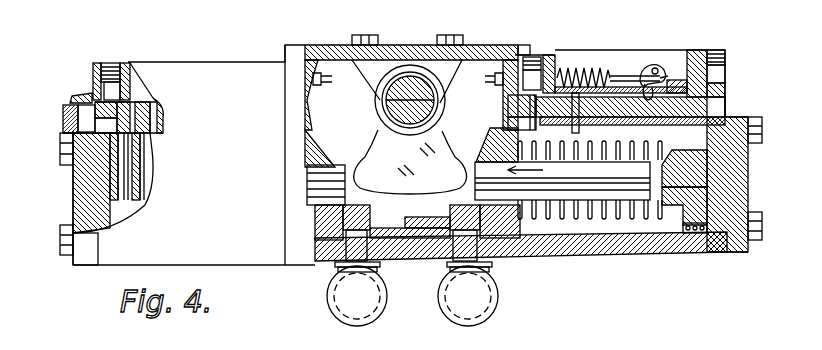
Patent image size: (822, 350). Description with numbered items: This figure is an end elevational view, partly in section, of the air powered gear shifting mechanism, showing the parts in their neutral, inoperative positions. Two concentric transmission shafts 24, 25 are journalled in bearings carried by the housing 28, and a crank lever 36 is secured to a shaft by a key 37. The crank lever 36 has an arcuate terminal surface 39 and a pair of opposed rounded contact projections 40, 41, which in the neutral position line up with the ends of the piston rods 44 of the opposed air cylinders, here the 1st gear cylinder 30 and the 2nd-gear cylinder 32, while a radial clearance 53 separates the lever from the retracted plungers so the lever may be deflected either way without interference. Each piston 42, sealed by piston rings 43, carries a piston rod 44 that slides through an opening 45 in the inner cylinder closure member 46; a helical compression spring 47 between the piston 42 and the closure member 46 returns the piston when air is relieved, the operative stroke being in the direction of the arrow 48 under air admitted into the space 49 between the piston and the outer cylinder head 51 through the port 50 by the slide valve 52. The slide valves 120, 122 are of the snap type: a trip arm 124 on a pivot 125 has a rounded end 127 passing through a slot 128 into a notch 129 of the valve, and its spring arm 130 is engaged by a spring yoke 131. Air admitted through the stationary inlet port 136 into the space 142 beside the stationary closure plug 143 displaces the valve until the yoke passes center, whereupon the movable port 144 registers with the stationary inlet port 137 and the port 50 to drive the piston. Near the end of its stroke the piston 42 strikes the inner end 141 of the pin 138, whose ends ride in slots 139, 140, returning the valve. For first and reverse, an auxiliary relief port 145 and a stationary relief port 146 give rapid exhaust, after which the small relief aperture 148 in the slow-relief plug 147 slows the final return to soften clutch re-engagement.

The inner transmission shaft 24 is at (387, 117).
The outer tubular transmission shaft 25 is at (382, 96).
The housing 28 is at (293, 44).
The 1st gear cylinder 30 is at (148, 157).
The 2nd-gear cylinder 32 is at (730, 254).
The crank lever 36 is at (446, 134).
The key 37 is at (416, 218).
The arcuate terminal surface 39 is at (413, 185).
The contact projection 40 is at (353, 170).
The contact projection 41 is at (458, 160).
The piston 42 is at (131, 208).
The piston rings 43 is at (698, 233).
The piston rod 44 is at (340, 195).
The opening 45 is at (543, 244).
The inner cylinder closure member 46 is at (505, 232).
The helical compression spring 47 is at (623, 228).
The arrow 48 is at (568, 180).
The space 49 is at (709, 156).
The port 50 is at (73, 174).
The outer cylinder head 51 is at (737, 179).
The slide valve 52 is at (513, 108).
The radial clearance 53 is at (352, 150).
The slide valve 120 is at (160, 103).
The slide valve 122 is at (724, 98).
The trip arm 124 is at (648, 72).
The pivot 125 is at (658, 70).
The rounded end 127 is at (641, 80).
The slot 128 is at (148, 100).
The notch 129 is at (642, 124).
The spring arm 130 is at (662, 68).
The spring yoke 131 is at (614, 77).
The stationary inlet port 136 is at (535, 73).
The stationary inlet port 137 is at (718, 70).
The pin 138 is at (575, 72).
The slot 139 is at (598, 80).
The slot 140 is at (596, 122).
The inner end of pin 141 is at (575, 128).
The space 142 is at (513, 122).
The stationary closure plug 143 is at (510, 98).
The movable port 144 is at (689, 72).
The auxiliary relief port 145 is at (168, 113).
The stationary relief port 146 is at (168, 132).
The slow-relief plug 147 is at (72, 101).
The relief aperture 148 is at (66, 117).